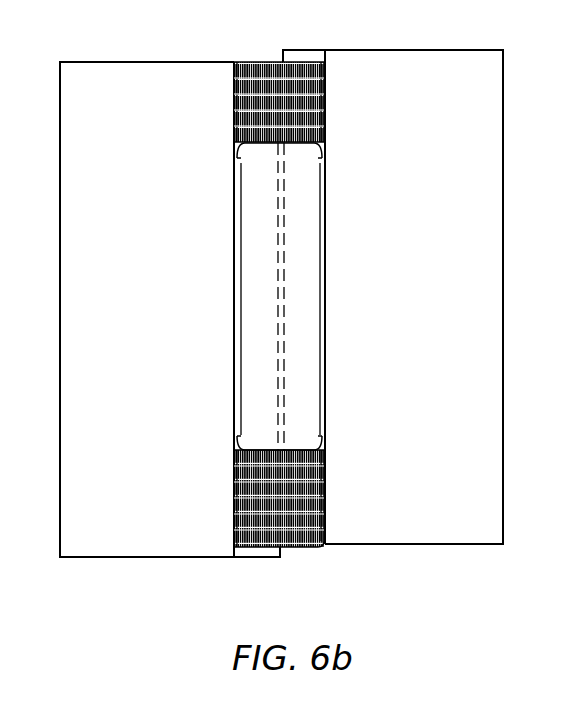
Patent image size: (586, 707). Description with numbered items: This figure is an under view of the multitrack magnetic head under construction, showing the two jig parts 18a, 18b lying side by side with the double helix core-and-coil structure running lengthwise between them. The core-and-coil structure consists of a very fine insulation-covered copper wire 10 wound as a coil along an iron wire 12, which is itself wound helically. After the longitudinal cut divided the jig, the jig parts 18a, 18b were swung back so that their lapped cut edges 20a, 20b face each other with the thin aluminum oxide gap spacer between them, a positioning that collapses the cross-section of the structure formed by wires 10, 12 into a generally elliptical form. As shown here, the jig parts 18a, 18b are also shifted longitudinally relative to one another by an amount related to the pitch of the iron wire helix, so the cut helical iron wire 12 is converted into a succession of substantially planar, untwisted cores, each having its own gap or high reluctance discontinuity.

The insulation-covered copper wire 10 is at (258, 62).
The iron wire 12 is at (246, 62).
The jig part 18a is at (146, 252).
The jig part 18b is at (426, 252).
The cut edge 20a is at (284, 558).
The cut edge 20b is at (279, 62).